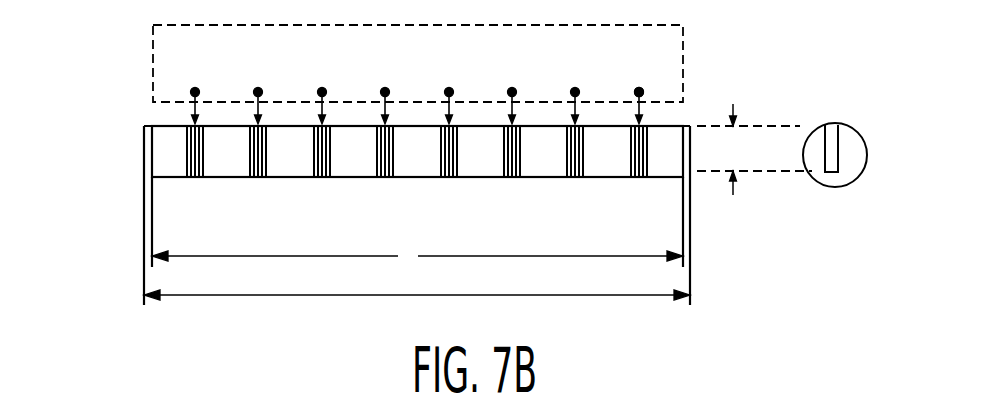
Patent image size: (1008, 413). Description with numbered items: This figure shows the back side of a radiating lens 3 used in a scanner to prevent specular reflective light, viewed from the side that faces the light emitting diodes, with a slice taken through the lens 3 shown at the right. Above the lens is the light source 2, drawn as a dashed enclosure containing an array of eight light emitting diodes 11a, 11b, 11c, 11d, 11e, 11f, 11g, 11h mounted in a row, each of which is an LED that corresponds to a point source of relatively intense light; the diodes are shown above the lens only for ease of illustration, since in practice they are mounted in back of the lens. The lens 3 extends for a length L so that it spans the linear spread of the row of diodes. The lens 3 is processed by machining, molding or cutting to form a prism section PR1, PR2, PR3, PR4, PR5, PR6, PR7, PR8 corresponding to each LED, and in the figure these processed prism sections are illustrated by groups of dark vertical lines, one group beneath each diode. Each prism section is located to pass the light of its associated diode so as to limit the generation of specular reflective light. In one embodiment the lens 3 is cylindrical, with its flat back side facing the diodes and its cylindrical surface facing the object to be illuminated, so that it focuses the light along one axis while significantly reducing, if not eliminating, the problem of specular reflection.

The light source 2 is at (695, 41).
The lens 3 is at (128, 157).
The light emitting diode 11a is at (638, 88).
The light emitting diode 11b is at (574, 88).
The light emitting diode 11c is at (511, 88).
The light emitting diode 11d is at (448, 88).
The light emitting diode 11e is at (384, 88).
The light emitting diode 11f is at (321, 88).
The light emitting diode 11g is at (257, 88).
The light emitting diode 11h is at (194, 88).
The light emitting diode LED is at (642, 90).
The prism section PR1 is at (639, 178).
The prism section PR2 is at (575, 178).
The prism section PR3 is at (512, 178).
The prism section PR4 is at (449, 178).
The prism section PR5 is at (385, 178).
The prism section PR6 is at (322, 178).
The prism section PR7 is at (258, 178).
The prism section PR8 is at (195, 178).
The length L is at (417, 255).